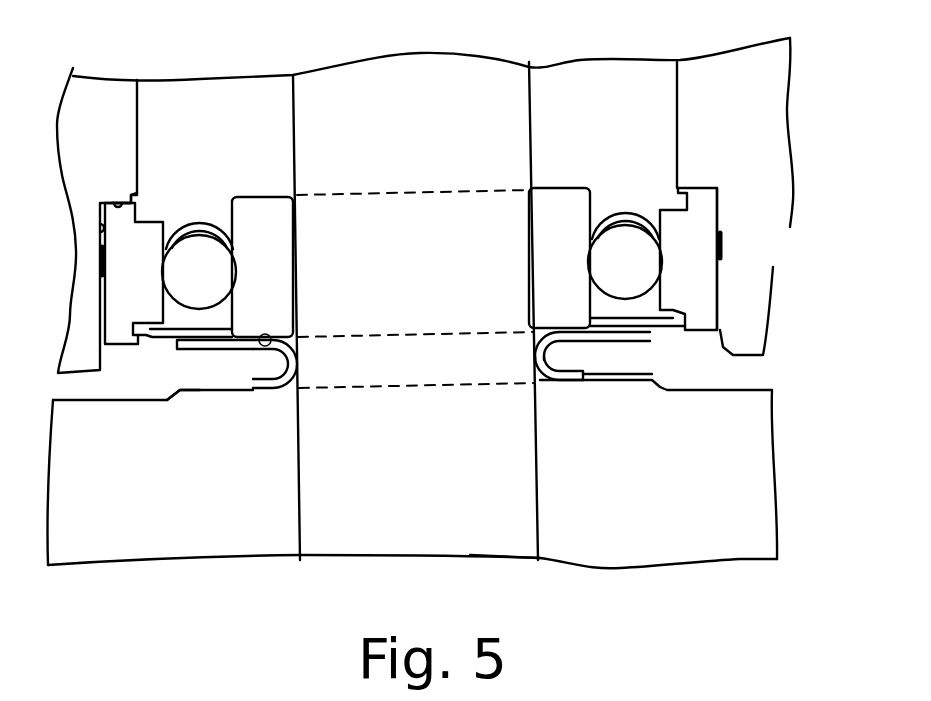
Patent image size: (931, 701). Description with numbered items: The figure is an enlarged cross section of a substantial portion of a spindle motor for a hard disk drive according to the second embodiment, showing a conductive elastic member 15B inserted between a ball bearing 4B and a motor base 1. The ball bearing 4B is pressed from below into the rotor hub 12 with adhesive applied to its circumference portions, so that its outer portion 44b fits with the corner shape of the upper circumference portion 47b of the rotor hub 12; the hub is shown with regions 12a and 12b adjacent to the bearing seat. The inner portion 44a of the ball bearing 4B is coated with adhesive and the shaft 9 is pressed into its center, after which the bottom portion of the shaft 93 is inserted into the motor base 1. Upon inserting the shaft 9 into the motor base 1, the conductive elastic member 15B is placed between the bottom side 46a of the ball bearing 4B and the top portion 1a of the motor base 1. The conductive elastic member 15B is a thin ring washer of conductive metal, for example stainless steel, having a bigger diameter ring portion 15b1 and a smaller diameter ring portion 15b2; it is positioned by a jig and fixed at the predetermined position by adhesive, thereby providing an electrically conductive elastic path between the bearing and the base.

The shaft 9 is at (413, 85).
The rotor hub 12 is at (677, 143).
The housing notch 12a is at (128, 197).
The housing inner wall 12b is at (722, 249).
The ball bearing 4B is at (188, 218).
The inner portion 44a is at (270, 280).
The outer portion 44b is at (123, 280).
The upper circumference portion 47b is at (102, 238).
The bottom side 46a is at (278, 339).
The conductive elastic member 15B is at (267, 393).
The bigger diameter ring portion 15b1 is at (655, 335).
The smaller diameter ring portion 15b2 is at (600, 383).
The motor base 1 is at (713, 485).
The top portion 1a is at (200, 384).
The bottom portion of the shaft 93 is at (495, 523).